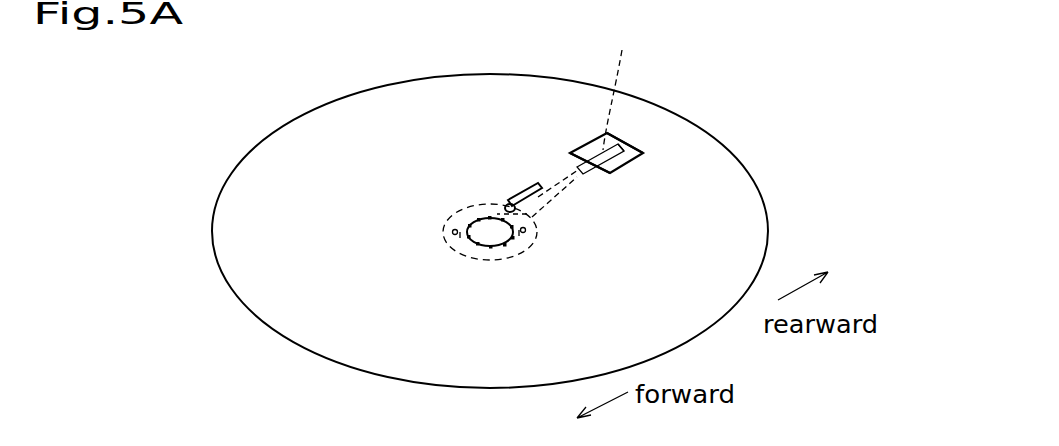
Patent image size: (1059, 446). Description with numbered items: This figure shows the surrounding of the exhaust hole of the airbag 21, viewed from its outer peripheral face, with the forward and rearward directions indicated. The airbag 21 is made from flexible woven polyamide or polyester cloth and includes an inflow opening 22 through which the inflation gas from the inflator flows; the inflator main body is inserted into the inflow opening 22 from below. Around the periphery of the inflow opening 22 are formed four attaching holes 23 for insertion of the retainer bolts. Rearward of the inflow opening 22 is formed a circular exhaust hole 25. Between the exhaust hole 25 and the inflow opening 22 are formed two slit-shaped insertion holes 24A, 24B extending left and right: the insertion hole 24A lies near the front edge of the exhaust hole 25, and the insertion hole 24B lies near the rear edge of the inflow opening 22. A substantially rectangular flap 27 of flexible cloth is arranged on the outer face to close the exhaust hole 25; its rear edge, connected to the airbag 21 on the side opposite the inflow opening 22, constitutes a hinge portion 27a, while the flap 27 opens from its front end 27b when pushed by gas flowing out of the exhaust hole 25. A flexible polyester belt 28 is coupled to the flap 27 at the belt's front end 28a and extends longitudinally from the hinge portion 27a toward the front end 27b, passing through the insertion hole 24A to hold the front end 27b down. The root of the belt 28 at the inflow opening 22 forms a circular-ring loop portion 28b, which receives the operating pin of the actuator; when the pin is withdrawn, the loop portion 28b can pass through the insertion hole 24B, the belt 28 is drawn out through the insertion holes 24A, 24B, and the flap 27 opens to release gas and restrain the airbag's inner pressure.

The airbag 21 is at (702, 100).
The inflow opening 22 is at (473, 228).
The attaching holes 23 is at (525, 240).
The insertion hole 24A is at (578, 176).
The insertion hole 24B is at (538, 192).
The exhaust hole 25 is at (624, 85).
The flap 27 is at (625, 167).
The hinge portion 27a is at (620, 140).
The front end 27b is at (605, 175).
The belt 28 is at (582, 150).
The front end of belt 28a is at (645, 150).
The loop portion 28b is at (495, 210).